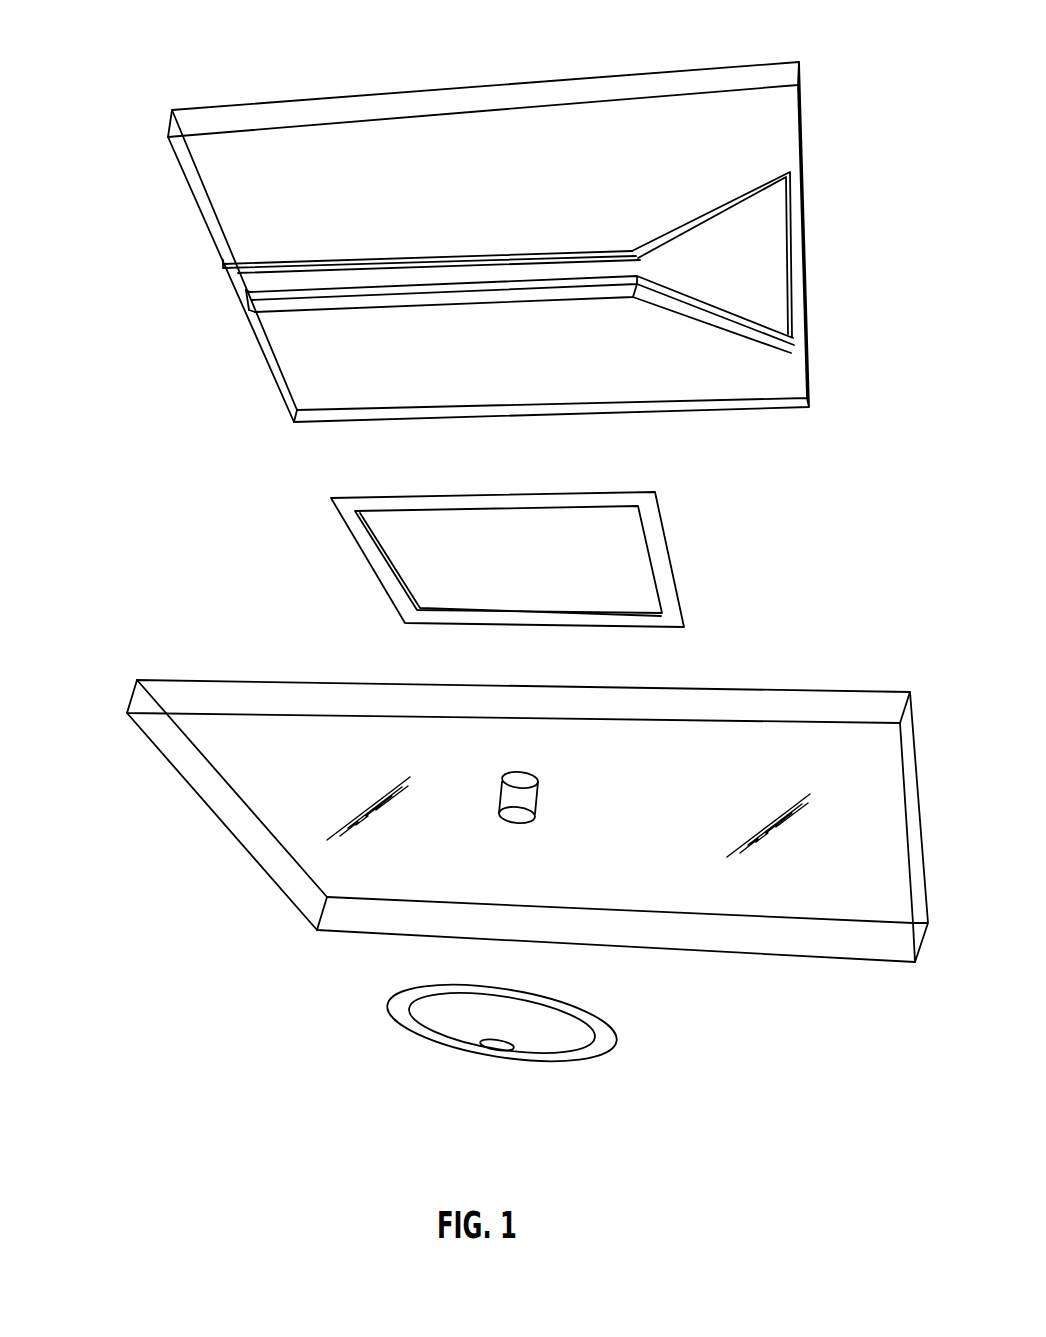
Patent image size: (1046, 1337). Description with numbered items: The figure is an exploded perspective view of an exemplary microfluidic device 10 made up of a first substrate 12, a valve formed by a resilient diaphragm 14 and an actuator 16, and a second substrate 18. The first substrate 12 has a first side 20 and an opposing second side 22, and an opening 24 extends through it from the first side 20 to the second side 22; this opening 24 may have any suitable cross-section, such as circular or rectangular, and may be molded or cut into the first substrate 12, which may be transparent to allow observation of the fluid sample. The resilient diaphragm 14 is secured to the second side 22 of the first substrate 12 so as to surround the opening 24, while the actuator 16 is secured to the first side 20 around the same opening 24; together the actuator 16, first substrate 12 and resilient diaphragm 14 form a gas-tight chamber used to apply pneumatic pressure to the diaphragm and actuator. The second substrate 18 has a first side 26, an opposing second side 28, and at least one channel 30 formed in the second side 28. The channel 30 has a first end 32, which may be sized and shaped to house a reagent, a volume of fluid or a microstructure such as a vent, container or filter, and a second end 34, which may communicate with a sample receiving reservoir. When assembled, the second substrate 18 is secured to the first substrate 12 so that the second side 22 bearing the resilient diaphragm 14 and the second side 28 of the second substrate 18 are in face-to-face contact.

The microfluidic device 10 is at (134, 27).
The first substrate 12 is at (527, 831).
The resilient diaphragm 14 is at (362, 550).
The actuator 16 is at (480, 1050).
The second substrate 18 is at (488, 246).
The first side 20 is at (781, 902).
The second side 22 is at (847, 690).
The opening 24 is at (535, 815).
The first side 26 is at (718, 72).
The second side 28 is at (215, 160).
The channel 30 is at (483, 275).
The first end 32 is at (728, 267).
The second end 34 is at (250, 300).